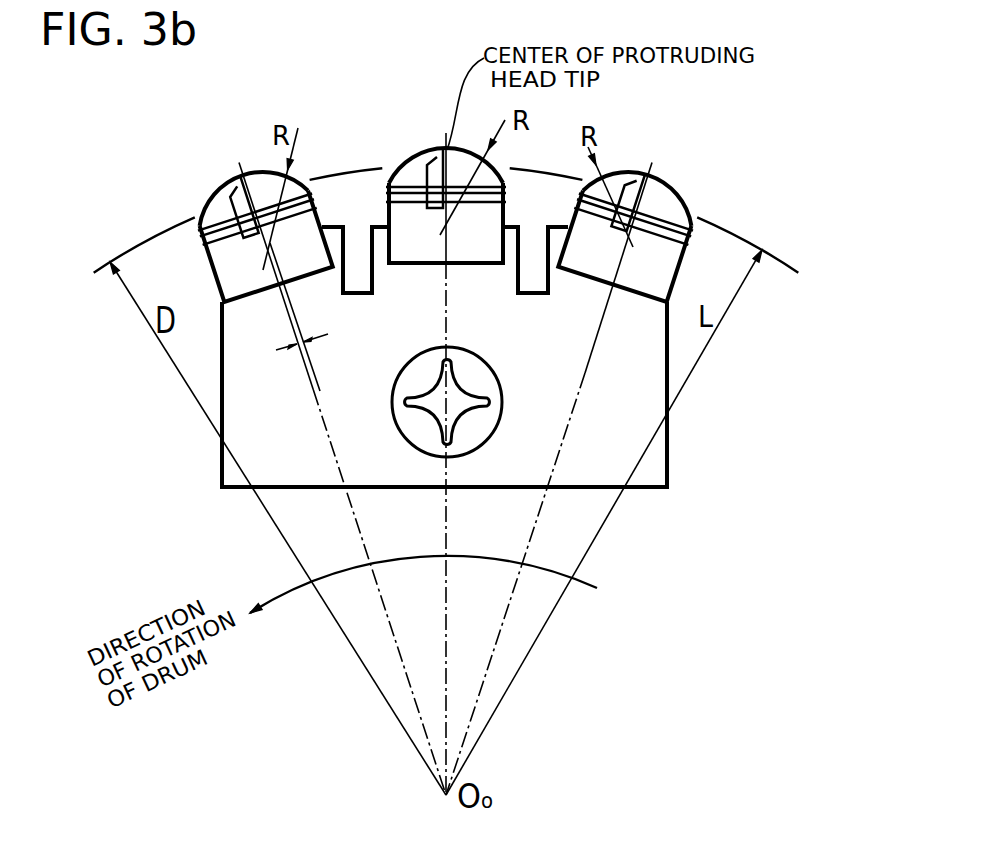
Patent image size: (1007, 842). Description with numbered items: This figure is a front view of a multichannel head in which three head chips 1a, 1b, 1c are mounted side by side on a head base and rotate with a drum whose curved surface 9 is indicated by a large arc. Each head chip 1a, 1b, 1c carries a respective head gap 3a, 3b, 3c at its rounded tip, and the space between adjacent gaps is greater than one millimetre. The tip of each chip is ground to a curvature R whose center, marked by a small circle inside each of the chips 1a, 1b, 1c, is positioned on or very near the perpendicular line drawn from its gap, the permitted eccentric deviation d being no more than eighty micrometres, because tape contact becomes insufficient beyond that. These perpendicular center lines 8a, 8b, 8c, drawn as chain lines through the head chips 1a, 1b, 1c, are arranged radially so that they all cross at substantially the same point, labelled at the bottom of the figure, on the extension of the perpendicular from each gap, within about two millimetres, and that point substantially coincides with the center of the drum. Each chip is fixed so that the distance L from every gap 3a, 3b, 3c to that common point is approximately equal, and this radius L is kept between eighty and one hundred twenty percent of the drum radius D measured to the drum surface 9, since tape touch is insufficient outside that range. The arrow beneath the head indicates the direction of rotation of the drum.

The drum surface 9 is at (140, 244).
The head gap 3a is at (242, 176).
The head gap 3b is at (441, 148).
The head gap 3c is at (651, 173).
The head chip 1a is at (312, 282).
The head chip 1b is at (428, 251).
The head chip 1c is at (591, 268).
The center line of first head 8a is at (281, 293).
The center line of second head 8b is at (448, 266).
The center line of third head 8c is at (610, 293).